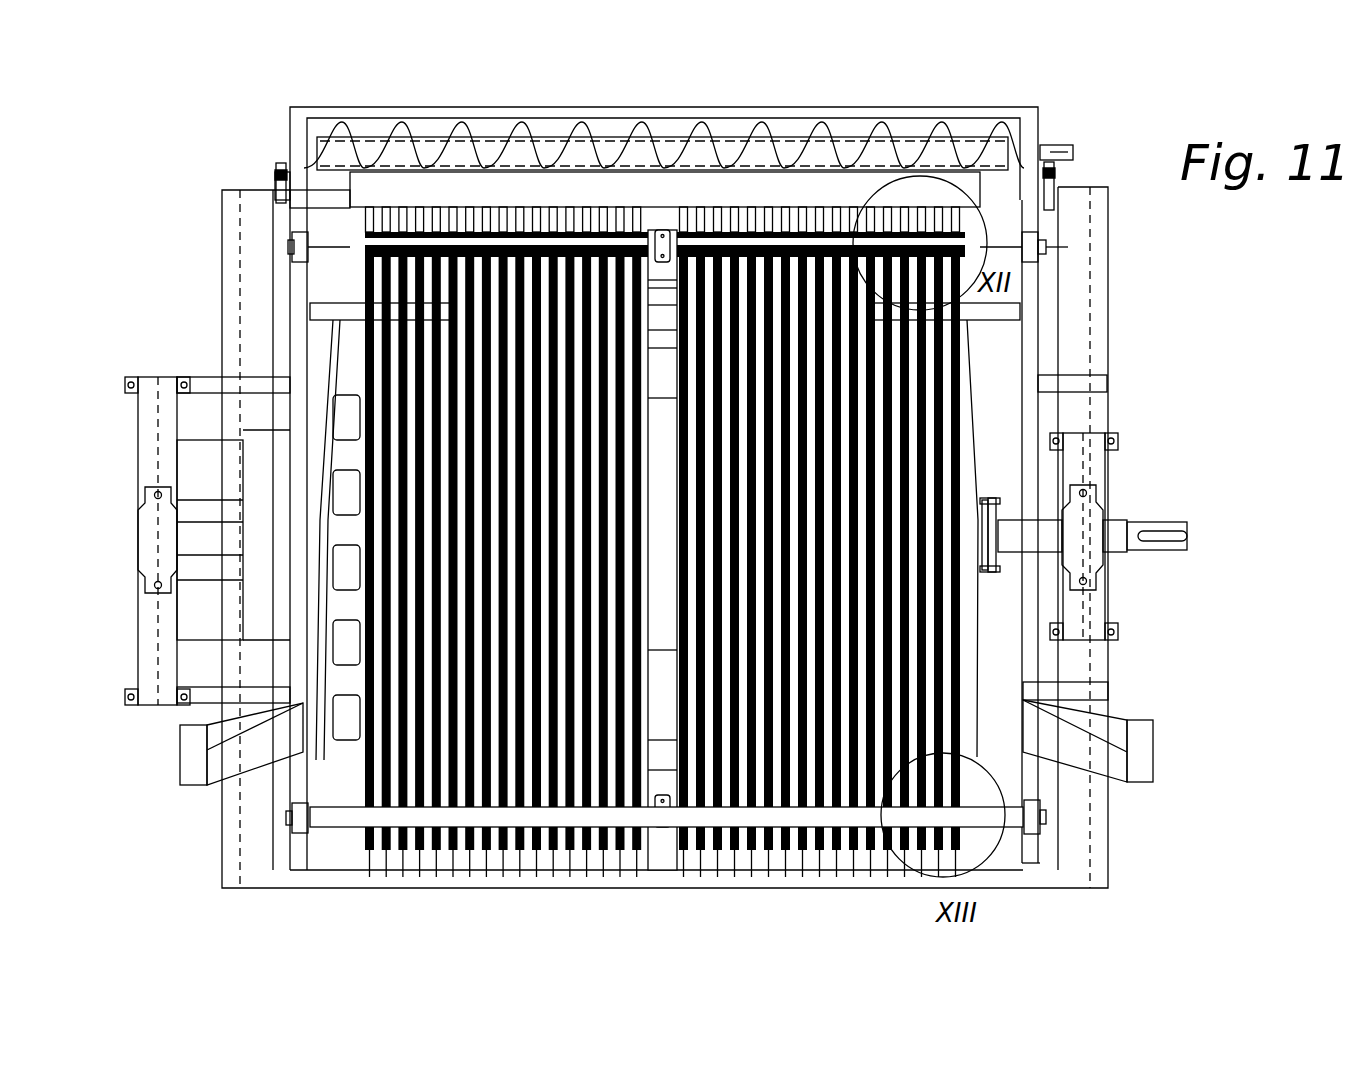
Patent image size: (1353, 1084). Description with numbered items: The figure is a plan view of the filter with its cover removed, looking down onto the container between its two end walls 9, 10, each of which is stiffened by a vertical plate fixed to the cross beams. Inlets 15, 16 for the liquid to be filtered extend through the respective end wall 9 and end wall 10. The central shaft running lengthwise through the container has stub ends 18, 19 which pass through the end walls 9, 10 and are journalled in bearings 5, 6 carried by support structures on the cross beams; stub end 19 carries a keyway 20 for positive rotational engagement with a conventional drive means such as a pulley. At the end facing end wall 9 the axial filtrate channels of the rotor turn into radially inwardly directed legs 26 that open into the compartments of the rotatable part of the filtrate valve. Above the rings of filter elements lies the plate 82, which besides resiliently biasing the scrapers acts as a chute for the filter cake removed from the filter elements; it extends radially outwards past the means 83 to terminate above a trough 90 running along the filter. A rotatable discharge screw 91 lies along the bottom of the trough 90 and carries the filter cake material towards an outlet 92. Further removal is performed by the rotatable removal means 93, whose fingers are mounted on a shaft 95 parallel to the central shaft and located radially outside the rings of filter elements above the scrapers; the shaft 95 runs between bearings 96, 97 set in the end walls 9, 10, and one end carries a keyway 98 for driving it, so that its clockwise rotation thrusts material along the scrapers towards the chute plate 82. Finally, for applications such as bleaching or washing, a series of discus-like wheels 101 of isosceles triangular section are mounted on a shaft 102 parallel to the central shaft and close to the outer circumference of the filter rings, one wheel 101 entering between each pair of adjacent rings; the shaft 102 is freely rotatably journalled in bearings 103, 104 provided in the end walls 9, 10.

The bearing 5 is at (158, 540).
The bearing 6 is at (1085, 535).
The end wall 9 is at (290, 325).
The end wall 10 is at (1032, 348).
The inlet 15 is at (200, 788).
The inlet 16 is at (1140, 722).
The stub end 18 is at (222, 545).
The stub end 19 is at (1115, 535).
The keyway 20 is at (1190, 536).
The legs 26 is at (345, 590).
The plate 82 is at (672, 185).
The means 83 is at (318, 190).
The trough 90 is at (1012, 106).
The discharge screw 91 is at (590, 122).
The outlet 92 is at (395, 125).
The rotatable removal means 93 is at (736, 178).
The shaft 95 is at (278, 192).
The bearing 96 is at (300, 243).
The bearing 97 is at (1045, 258).
The keyway 98 is at (1060, 235).
The wheels 101 is at (812, 878).
The shaft 102 is at (338, 828).
The bearing 103 is at (292, 828).
The bearing 104 is at (1042, 812).